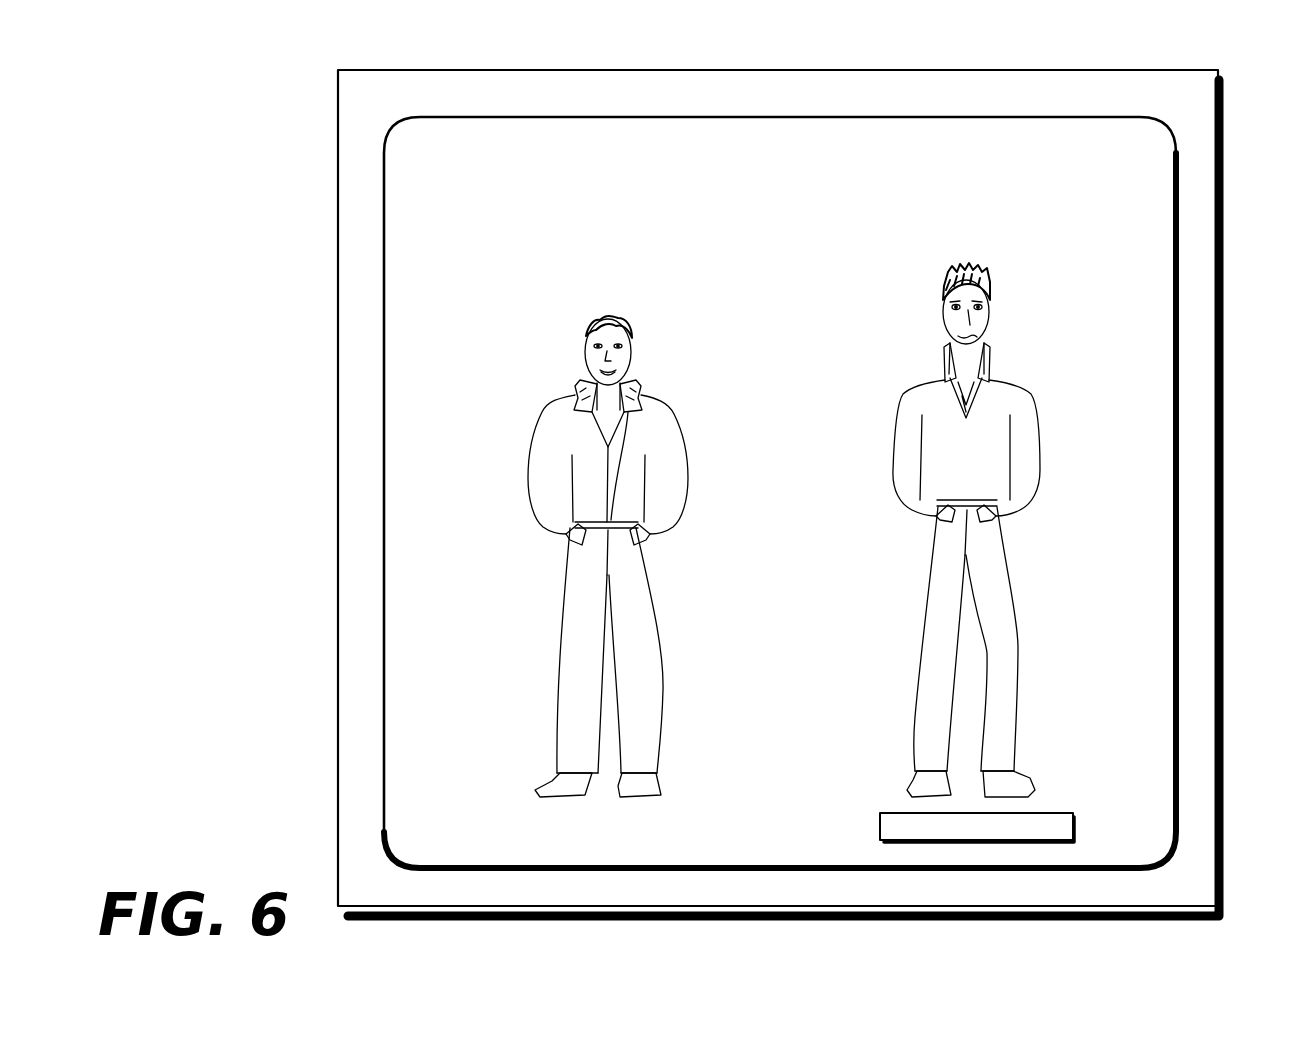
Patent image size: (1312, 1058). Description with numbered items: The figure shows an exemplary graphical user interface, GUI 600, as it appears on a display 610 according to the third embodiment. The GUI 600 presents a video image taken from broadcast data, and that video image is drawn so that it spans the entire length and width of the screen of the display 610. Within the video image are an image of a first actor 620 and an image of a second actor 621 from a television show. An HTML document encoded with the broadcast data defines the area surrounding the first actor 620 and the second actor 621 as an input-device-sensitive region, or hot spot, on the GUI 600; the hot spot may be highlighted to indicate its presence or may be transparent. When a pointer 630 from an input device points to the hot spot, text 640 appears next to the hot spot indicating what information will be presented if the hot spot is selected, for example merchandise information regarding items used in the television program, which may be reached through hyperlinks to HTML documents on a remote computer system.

The GUI 600 is at (1150, 678).
The display 610 is at (1200, 591).
The first actor 620 is at (1018, 682).
The second actor 621 is at (663, 679).
The pointer 630 is at (928, 324).
The text 640 is at (1076, 828).